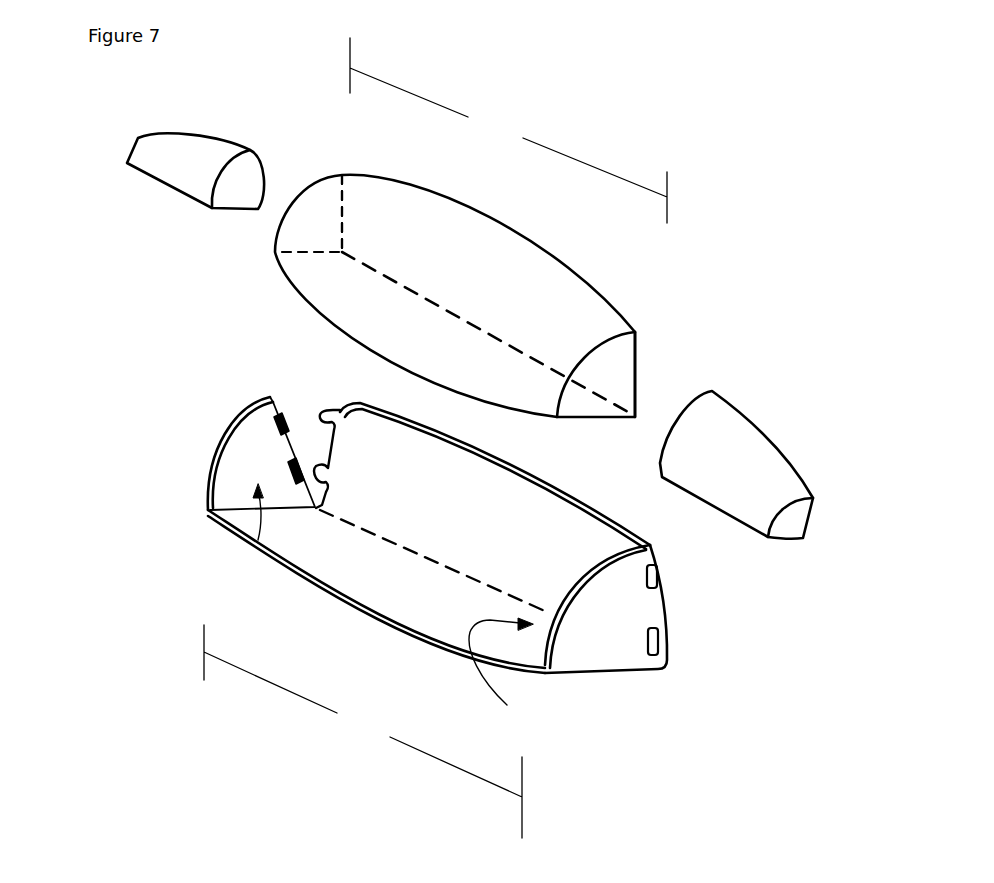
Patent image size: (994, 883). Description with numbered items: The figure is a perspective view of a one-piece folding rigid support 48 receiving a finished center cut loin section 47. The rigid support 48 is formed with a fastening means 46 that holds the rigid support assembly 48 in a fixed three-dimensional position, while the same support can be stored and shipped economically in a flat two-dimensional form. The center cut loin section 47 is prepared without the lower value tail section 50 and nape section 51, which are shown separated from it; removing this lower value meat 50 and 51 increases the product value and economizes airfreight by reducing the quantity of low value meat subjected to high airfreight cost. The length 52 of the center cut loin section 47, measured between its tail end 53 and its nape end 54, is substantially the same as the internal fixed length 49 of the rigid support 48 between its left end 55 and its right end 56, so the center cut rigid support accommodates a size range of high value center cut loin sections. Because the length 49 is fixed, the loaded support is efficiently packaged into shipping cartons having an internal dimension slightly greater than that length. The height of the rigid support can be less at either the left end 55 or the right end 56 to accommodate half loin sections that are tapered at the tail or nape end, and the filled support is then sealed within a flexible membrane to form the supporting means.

The fastening means 46 is at (323, 410).
The finished center cut loin section 47 is at (455, 296).
The rigid support 48 is at (337, 560).
The fixed length 49 is at (363, 731).
The tail section 50 is at (190, 157).
The nape section 51 is at (733, 458).
The length of the center cut loin section 52 is at (508, 130).
The tail end 53 is at (340, 175).
The nape end 54 is at (632, 326).
The left end 55 is at (258, 540).
The right end 56 is at (507, 677).